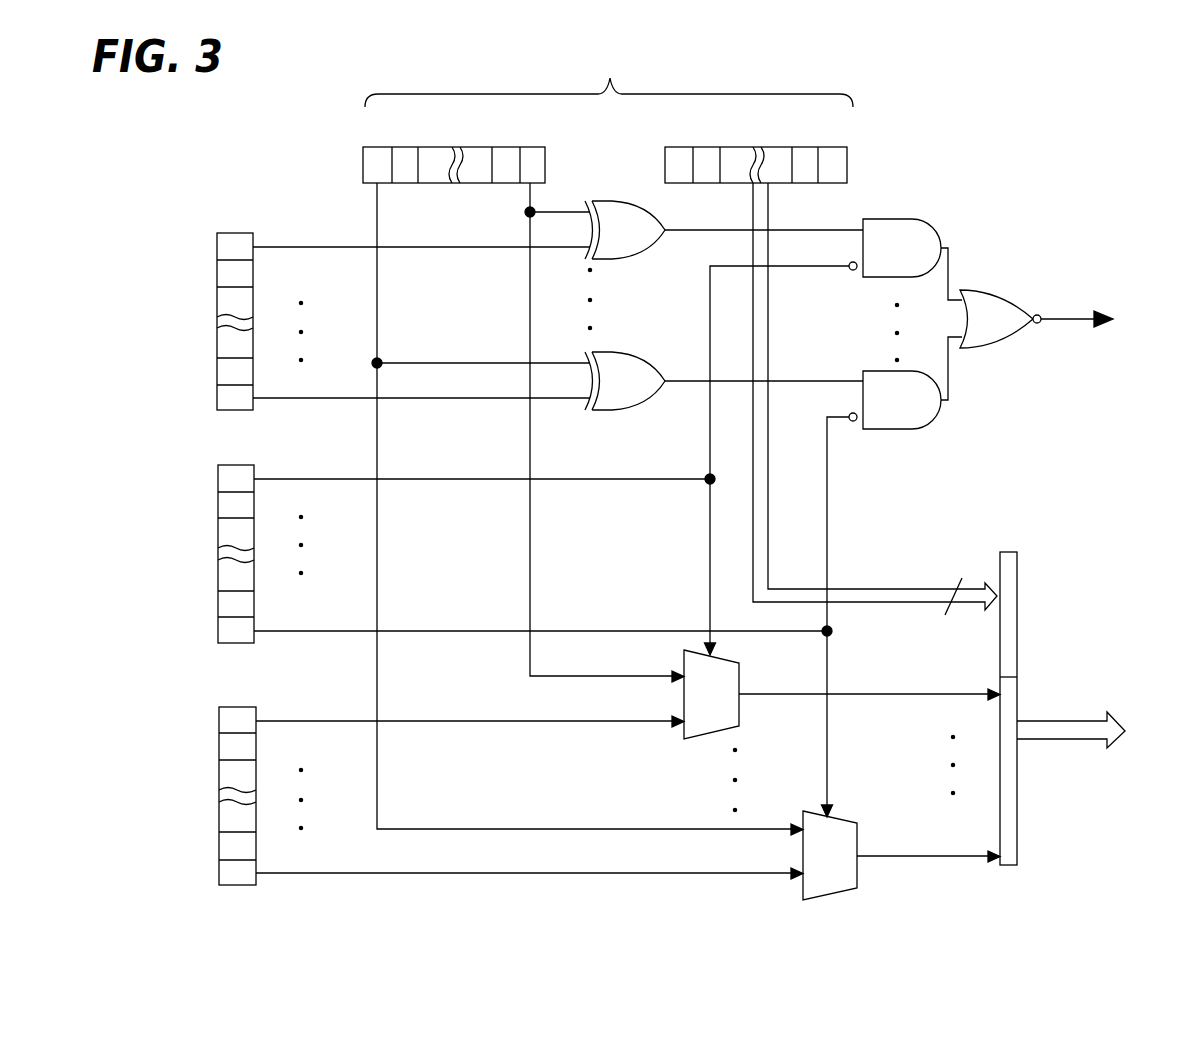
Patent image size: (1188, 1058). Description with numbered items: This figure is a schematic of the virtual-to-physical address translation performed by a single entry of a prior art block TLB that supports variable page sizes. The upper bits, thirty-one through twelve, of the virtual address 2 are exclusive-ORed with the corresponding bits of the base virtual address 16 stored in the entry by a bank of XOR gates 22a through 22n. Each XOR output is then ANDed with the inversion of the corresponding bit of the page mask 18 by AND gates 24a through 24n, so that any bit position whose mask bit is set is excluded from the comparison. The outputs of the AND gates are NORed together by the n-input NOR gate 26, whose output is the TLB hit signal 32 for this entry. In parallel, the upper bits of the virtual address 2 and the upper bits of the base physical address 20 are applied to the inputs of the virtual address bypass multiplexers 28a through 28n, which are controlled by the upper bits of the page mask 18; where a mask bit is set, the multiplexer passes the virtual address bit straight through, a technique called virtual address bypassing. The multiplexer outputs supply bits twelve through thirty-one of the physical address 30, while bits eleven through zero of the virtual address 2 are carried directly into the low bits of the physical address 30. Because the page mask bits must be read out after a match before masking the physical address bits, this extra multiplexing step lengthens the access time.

The virtual address 2 is at (454, 92).
The base virtual address 16 is at (232, 233).
The page mask 18 is at (223, 464).
The base physical address 20 is at (228, 705).
The XOR gate 22a is at (620, 257).
The XOR gate 22n is at (627, 361).
The AND gate 24a is at (882, 219).
The AND gate 24n is at (878, 373).
The n-input NOR gate 26 is at (1009, 301).
The virtual address bypass multiplexer 28a is at (741, 665).
The virtual address bypass multiplexer 28n is at (839, 822).
The physical address 30 is at (1117, 714).
The TLB hit signal 32 is at (1070, 321).